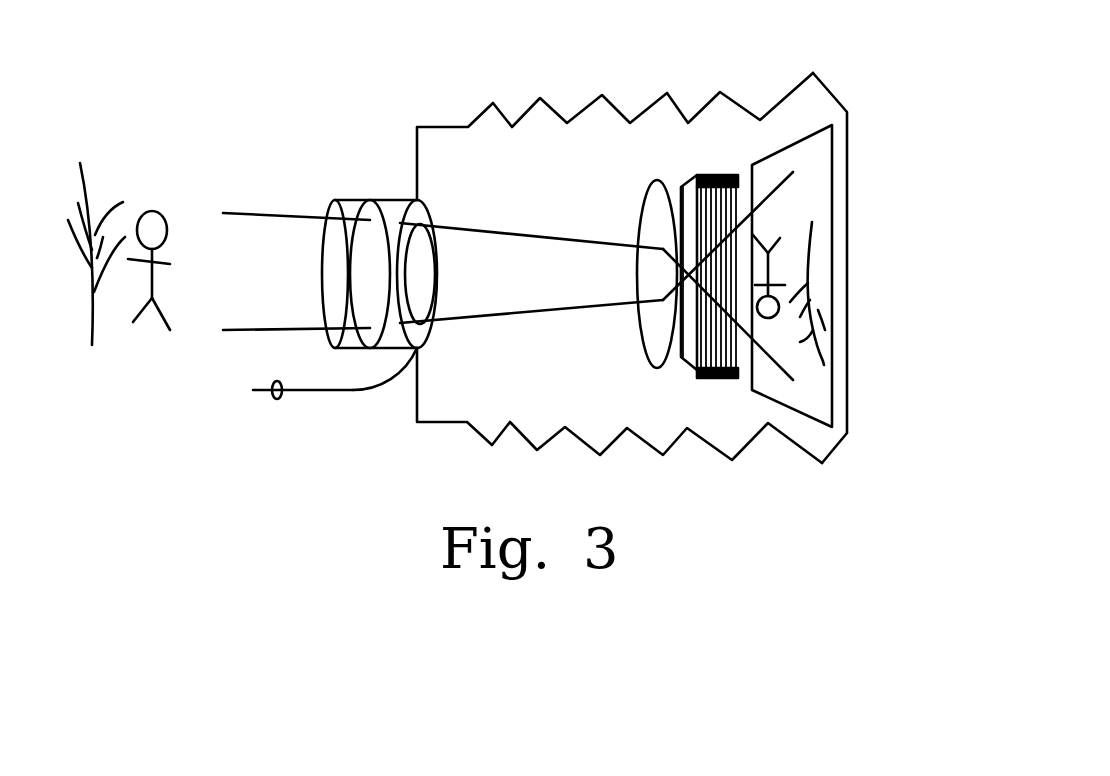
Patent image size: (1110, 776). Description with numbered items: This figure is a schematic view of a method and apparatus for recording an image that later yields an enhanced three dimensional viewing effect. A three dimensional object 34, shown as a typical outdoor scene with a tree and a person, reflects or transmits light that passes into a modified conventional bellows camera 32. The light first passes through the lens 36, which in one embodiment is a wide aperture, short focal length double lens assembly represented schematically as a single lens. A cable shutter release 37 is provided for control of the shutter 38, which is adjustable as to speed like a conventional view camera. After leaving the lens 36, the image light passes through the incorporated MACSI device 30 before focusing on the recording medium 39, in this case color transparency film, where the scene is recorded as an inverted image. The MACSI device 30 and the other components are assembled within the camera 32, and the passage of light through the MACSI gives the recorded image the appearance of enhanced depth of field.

The MACSI device 30 is at (718, 160).
The camera 32 is at (674, 449).
The object 34 is at (124, 356).
The lens 36 is at (383, 202).
The cable shutter release 37 is at (308, 392).
The shutter 38 is at (433, 227).
The recording medium 39 is at (807, 367).